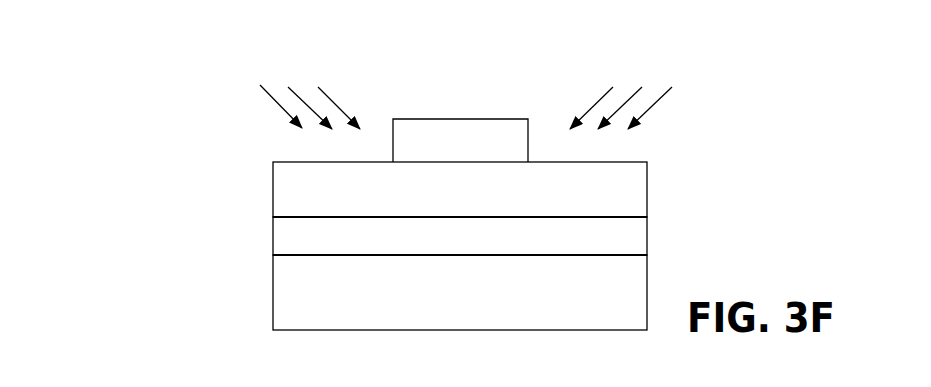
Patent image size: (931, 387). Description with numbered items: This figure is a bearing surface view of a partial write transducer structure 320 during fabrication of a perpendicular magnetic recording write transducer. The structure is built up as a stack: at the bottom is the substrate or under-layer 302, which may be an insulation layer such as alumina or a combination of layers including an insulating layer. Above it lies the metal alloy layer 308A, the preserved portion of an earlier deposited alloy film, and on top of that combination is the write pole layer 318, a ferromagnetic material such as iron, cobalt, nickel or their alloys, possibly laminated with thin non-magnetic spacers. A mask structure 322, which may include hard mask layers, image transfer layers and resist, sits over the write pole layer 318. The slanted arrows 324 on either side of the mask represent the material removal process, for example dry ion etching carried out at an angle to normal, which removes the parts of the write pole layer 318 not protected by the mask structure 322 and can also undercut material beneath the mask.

The substrate or under-layer 302 is at (287, 277).
The metal alloy layer 308A is at (287, 230).
The write pole layer 318 is at (287, 185).
The partial write transducer structure 320 is at (337, 246).
The mask structure 322 is at (400, 140).
The slanted arrows 324 is at (276, 71).